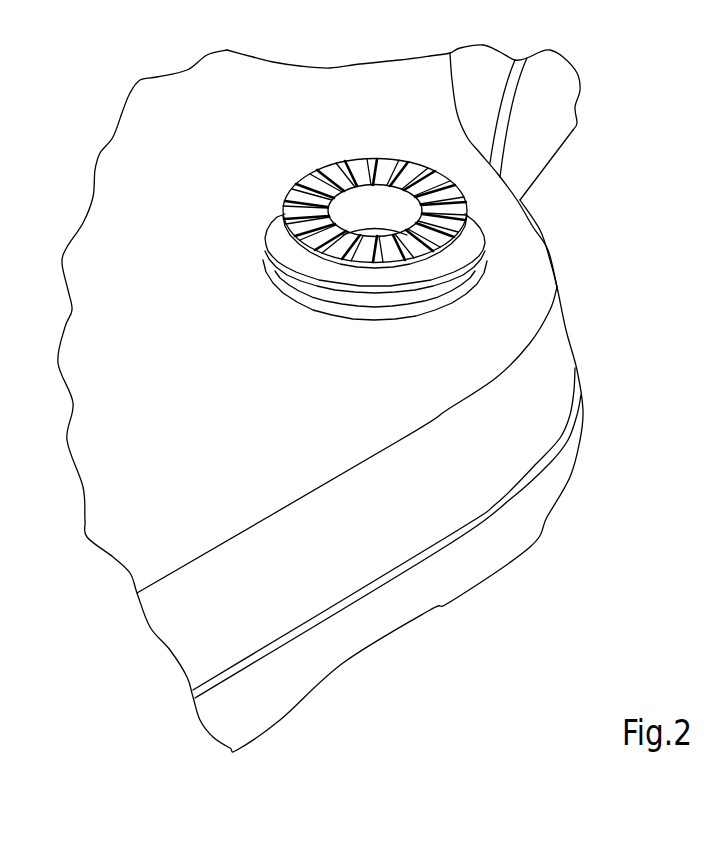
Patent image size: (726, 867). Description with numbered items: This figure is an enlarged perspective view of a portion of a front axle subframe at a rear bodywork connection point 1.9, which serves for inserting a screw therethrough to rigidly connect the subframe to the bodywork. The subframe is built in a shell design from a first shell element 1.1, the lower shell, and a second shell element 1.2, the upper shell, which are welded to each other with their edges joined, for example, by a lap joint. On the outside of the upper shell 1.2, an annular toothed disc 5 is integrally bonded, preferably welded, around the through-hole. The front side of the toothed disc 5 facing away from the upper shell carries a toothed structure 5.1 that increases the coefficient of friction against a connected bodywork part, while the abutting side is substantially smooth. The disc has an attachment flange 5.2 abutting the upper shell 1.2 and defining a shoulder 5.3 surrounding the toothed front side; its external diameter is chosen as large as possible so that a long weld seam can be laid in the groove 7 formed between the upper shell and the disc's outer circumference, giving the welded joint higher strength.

The first shell element 1.1 is at (545, 510).
The second shell element 1.2 is at (530, 430).
The rear bodywork connection point 1.9 is at (492, 221).
The toothed disc 5 is at (354, 158).
The toothed structure 5.1 is at (320, 172).
The attachment flange 5.2 is at (478, 282).
The shoulder 5.3 is at (488, 243).
The groove 7 is at (283, 290).